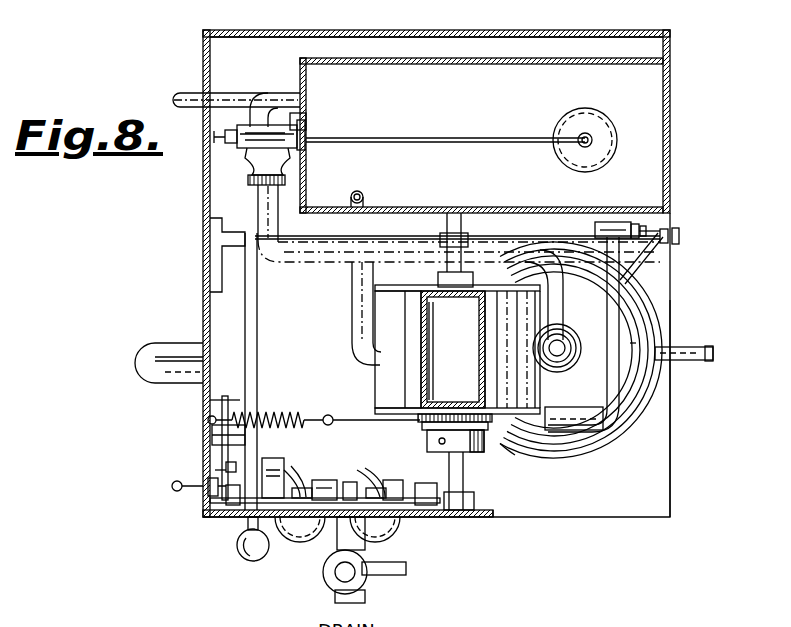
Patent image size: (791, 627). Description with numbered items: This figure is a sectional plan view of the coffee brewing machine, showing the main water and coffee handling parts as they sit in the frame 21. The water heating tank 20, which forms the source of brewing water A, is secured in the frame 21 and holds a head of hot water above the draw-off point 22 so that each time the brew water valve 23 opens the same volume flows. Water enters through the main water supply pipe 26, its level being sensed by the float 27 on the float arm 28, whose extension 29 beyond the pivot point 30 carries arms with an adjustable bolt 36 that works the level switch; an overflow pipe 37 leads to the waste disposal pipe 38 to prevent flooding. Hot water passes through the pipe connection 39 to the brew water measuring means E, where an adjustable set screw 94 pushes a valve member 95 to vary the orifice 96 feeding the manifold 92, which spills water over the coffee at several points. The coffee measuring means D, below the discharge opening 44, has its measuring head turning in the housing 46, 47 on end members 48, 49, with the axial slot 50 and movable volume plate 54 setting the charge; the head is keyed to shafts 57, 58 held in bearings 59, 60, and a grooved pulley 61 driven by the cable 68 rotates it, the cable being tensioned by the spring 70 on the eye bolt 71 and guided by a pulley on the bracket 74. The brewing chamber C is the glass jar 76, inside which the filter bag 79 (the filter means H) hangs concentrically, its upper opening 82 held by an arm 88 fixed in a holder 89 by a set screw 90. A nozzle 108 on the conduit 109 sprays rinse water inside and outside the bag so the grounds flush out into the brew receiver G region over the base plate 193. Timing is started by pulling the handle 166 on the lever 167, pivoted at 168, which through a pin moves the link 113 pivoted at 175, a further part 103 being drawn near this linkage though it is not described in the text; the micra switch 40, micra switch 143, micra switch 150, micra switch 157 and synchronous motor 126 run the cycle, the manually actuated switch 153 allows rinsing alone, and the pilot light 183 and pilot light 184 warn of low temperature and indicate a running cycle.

The water heating tank 20 is at (575, 58).
The frame 21 is at (462, 36).
The draw-off point 22 is at (305, 97).
The brew water valve 23 is at (256, 165).
The main water supply pipe 26 is at (182, 97).
The float 27 is at (601, 132).
The float arm 28 is at (446, 138).
The extension 29 is at (240, 140).
The pivot point 30 is at (306, 122).
The adjustable bolt 36 is at (225, 137).
The overflow pipe 37 is at (362, 192).
The waste disposal pipe 38 is at (165, 385).
The pipe connection 39 is at (262, 92).
The micra switch 40 is at (318, 480).
The discharge opening 44 is at (430, 390).
The housing 46 is at (500, 418).
The housing 47 is at (408, 327).
The end member 48 is at (528, 440).
The end member 49 is at (383, 297).
The slot 50 is at (432, 320).
The movable volume plate 54 is at (434, 370).
The shaft 57 is at (466, 478).
The shaft 58 is at (432, 258).
The bearing 59 is at (475, 500).
The bearing 60 is at (461, 225).
The grooved pulley 61 is at (420, 430).
The flexible chain or cable 68 is at (352, 412).
The spring 70 is at (270, 410).
The eye bolt 71 is at (212, 432).
The bracket 74 is at (208, 402).
The glass jar 76 is at (643, 300).
The filter bag 79 is at (652, 368).
The opening 82 is at (605, 330).
The arm 88 is at (640, 260).
The holder 89 is at (668, 248).
The set screw 90 is at (680, 236).
The manifold 92 is at (612, 392).
The adjustable set screw 94 is at (646, 230).
The valve member 95 is at (630, 222).
The orifice 96 is at (590, 222).
The pin 103 is at (216, 470).
The nozzle 108 is at (558, 360).
The conduit 109 is at (558, 318).
The link 113 is at (226, 397).
The synchronous motor 126 is at (272, 465).
The micra switch 143 is at (335, 522).
The micra switch 150 is at (398, 485).
The manually actuated switch 153 is at (172, 486).
The micra switch 157 is at (428, 506).
The handle 166 is at (245, 552).
The lever 167 is at (250, 325).
The pivot 168 is at (255, 248).
The pivot 175 is at (228, 497).
The pilot light 183 is at (300, 537).
The pilot light 184 is at (366, 542).
The base plate 193 is at (655, 460).
The source of brewing water A is at (506, 96).
The brewing chamber C is at (588, 445).
The measuring means D is at (450, 345).
The brew water measuring means E is at (606, 420).
The brew receiver G is at (628, 322).
The filter means H is at (630, 343).